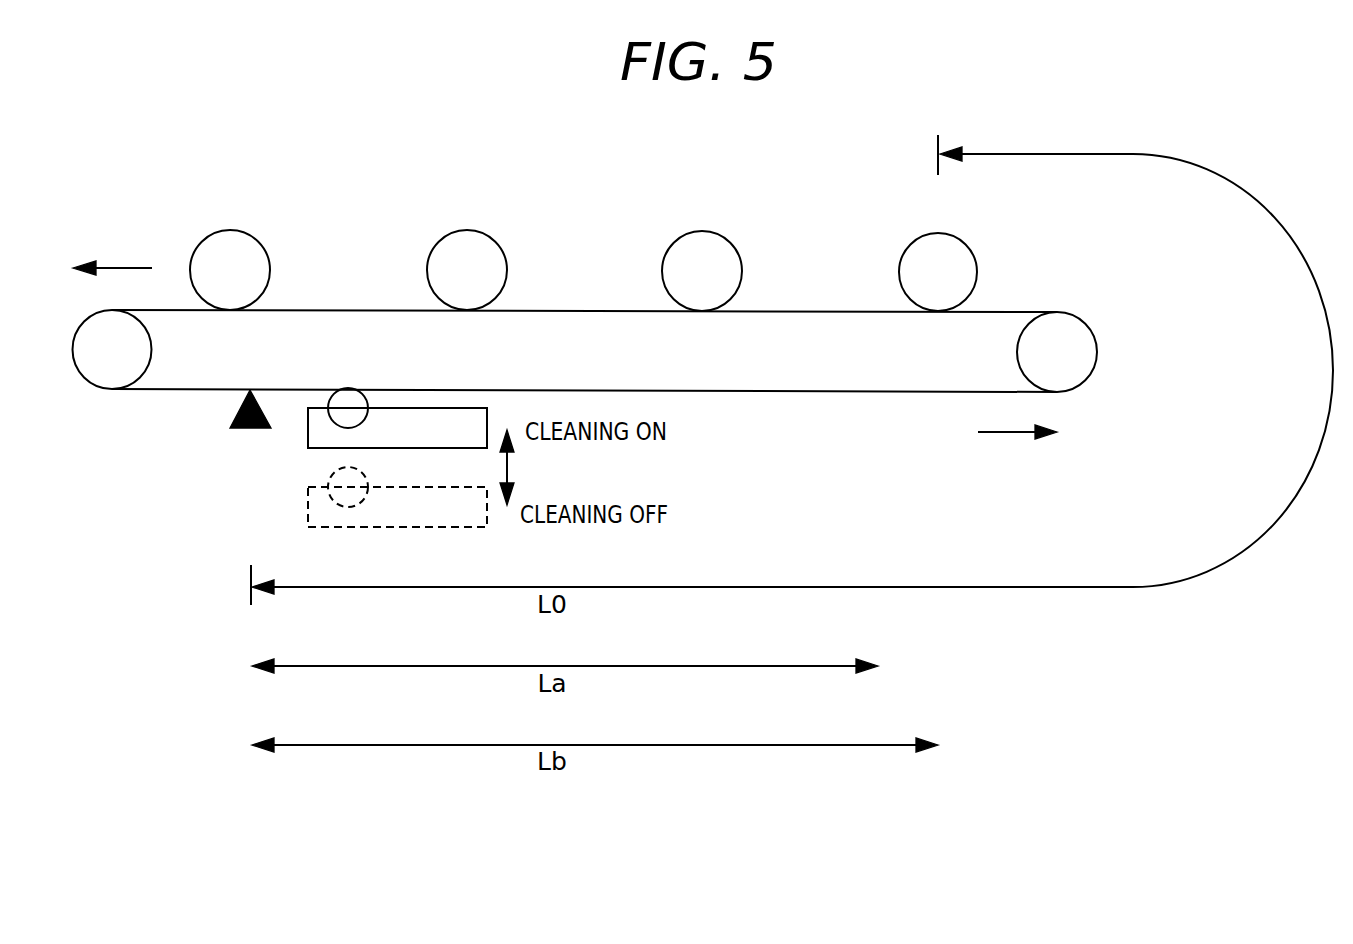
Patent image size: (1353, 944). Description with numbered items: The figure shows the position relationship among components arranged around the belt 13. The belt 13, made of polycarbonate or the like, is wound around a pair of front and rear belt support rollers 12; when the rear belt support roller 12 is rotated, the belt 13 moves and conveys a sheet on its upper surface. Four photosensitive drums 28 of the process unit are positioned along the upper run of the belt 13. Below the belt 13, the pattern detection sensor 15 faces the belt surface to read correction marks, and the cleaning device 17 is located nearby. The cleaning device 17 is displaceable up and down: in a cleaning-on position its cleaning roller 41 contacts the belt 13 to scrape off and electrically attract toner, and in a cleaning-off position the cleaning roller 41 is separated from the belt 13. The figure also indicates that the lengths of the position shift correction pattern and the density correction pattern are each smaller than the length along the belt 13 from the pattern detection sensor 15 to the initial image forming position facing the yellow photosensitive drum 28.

The belt support roller 12 is at (110, 373).
The belt 13 is at (850, 392).
The pattern detection sensor 15 is at (235, 412).
The cleaning device 17 is at (308, 437).
The photosensitive drum 28 is at (229, 240).
The cleaning roller 41 is at (348, 402).